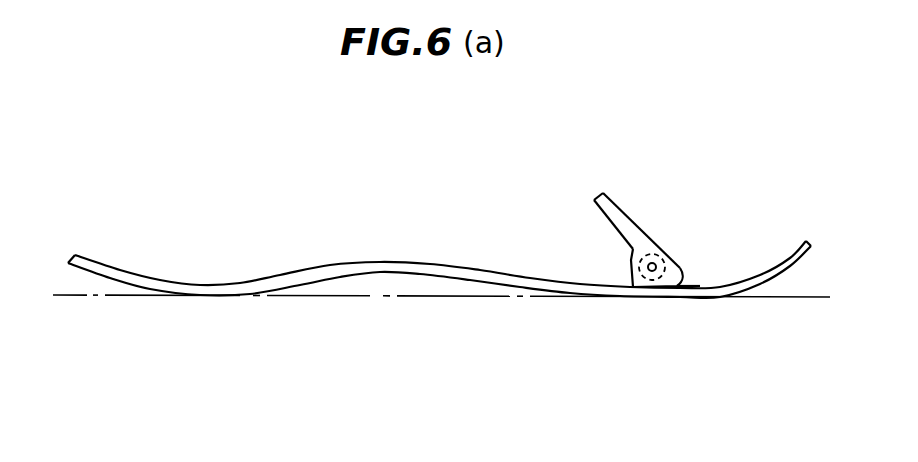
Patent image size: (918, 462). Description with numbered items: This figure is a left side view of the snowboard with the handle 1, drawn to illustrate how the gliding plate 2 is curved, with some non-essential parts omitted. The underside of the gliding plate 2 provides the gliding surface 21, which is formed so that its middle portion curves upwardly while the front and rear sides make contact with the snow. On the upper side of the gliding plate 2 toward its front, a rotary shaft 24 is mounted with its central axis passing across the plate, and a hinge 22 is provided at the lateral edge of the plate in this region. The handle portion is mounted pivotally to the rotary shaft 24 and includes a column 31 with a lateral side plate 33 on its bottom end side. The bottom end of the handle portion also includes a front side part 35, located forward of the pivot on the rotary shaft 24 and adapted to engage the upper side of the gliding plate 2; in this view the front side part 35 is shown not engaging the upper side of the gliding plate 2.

The snowboard with the handle 1 is at (183, 270).
The gliding plate 2 is at (450, 268).
The gliding surface 21 is at (482, 282).
The hinge 22 is at (632, 285).
The rotary shaft 24 is at (635, 257).
The column 31 is at (617, 213).
The lateral side plate 33 is at (672, 268).
The front side part 35 is at (688, 278).